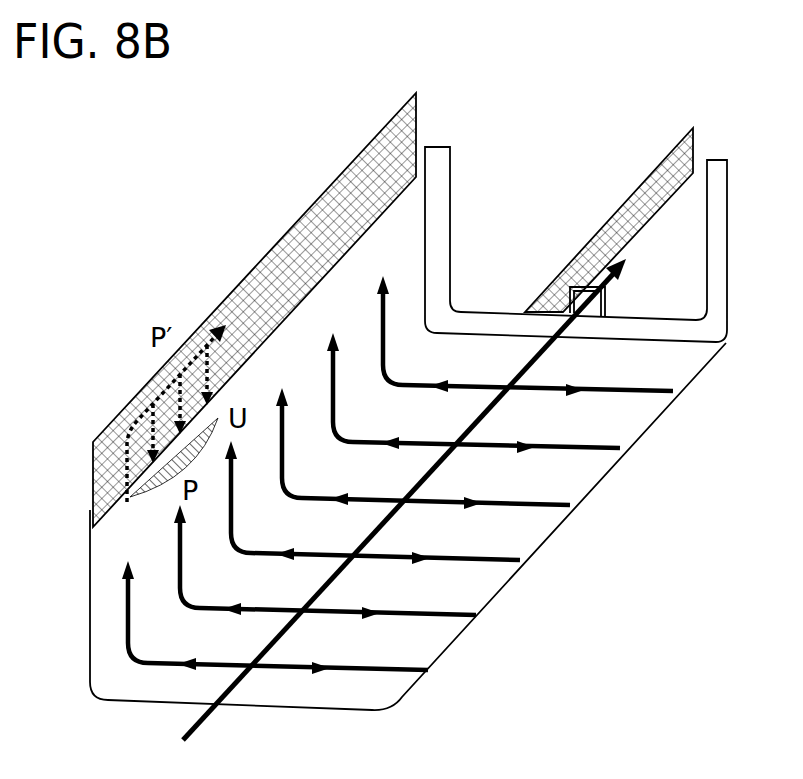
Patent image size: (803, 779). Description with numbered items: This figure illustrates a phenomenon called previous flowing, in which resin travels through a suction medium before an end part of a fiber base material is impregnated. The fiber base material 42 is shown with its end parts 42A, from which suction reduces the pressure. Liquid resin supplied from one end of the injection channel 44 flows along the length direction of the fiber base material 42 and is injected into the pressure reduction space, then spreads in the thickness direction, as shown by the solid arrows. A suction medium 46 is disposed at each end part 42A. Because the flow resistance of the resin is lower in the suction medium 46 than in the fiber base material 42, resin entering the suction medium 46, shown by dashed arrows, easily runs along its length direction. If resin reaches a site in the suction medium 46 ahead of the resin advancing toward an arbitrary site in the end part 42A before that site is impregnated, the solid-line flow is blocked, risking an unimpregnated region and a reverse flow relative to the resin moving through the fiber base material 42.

The fiber base material 42 is at (640, 430).
The end part of the fiber base material 42A is at (440, 148).
The injection channel 44 is at (571, 286).
The suction medium 46 is at (315, 198).